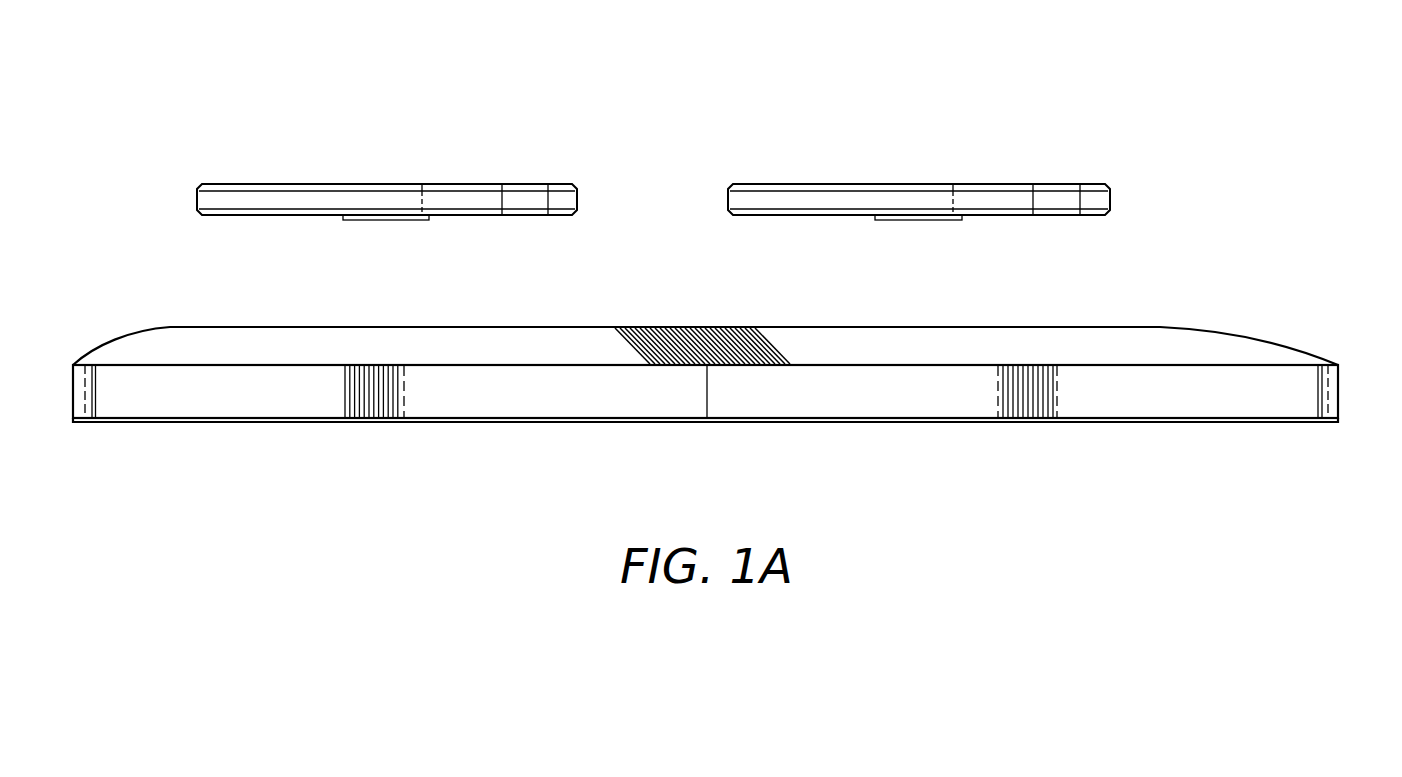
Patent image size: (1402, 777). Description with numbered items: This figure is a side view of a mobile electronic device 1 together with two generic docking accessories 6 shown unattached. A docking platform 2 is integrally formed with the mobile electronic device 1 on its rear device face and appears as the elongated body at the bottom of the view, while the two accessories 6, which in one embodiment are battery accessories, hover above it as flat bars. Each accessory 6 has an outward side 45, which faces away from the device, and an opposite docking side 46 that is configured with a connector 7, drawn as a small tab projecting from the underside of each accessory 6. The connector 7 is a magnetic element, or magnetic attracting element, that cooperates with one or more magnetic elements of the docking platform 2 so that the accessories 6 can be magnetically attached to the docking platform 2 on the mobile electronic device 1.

The mobile electronic device 1 is at (736, 303).
The docking platform 2 is at (425, 348).
The docking accessory 6 is at (658, 164).
The connector 7 is at (403, 220).
The outward side 45 is at (285, 175).
The docking side 46 is at (260, 222).